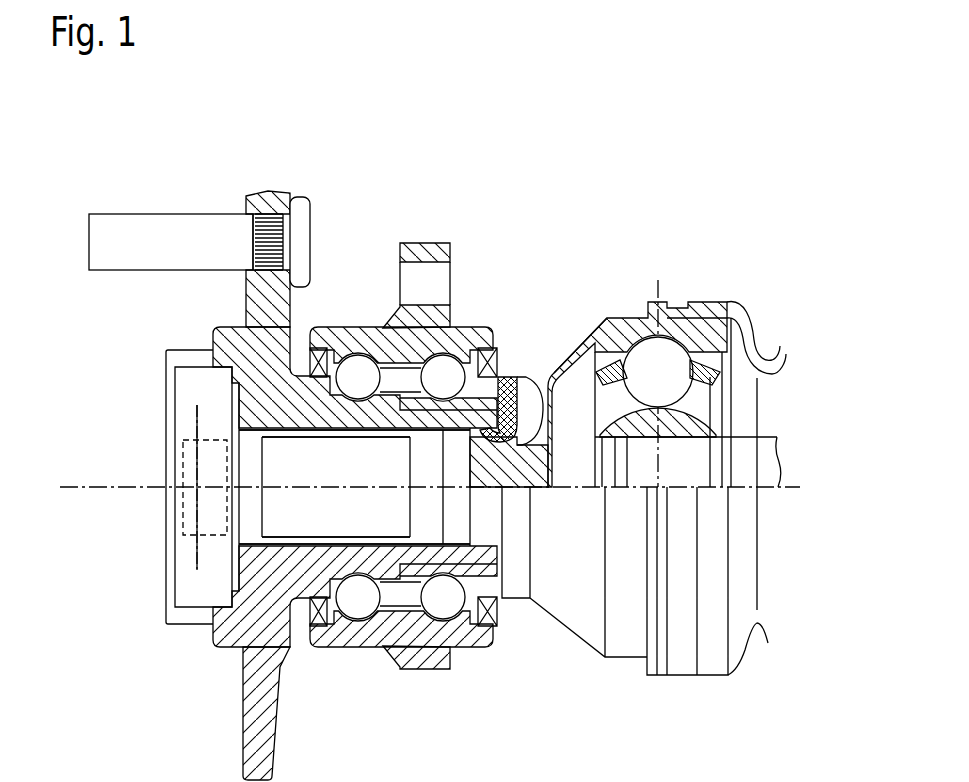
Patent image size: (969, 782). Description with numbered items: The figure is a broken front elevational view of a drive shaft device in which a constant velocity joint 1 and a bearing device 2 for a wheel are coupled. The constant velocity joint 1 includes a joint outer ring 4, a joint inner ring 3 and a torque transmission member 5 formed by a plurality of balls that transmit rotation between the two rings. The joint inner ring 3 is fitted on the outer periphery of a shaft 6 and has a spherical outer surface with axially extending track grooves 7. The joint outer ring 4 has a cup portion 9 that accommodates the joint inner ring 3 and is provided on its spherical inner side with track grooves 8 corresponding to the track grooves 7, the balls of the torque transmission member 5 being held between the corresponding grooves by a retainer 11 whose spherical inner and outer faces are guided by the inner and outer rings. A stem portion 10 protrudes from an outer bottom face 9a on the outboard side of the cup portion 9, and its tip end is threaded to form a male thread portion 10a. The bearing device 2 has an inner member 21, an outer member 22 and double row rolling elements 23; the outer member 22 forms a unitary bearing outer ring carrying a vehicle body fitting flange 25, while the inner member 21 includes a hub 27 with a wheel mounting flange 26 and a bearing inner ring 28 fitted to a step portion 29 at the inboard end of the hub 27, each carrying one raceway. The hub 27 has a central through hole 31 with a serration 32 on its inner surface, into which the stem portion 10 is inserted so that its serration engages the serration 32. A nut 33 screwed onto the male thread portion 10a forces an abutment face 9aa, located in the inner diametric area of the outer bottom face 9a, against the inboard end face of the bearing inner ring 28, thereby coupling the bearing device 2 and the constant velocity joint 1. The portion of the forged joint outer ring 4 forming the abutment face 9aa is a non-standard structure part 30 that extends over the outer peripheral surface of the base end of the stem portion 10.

The constant velocity joint 1 is at (642, 258).
The bearing device 2 is at (360, 255).
The joint inner ring 3 is at (650, 434).
The joint outer ring 4 is at (643, 304).
The torque transmission member 5 is at (703, 348).
The shaft 6 is at (765, 468).
The track grooves 7 is at (697, 403).
The track grooves 8 is at (740, 323).
The cup portion 9 is at (596, 330).
The outer bottom face 9a is at (560, 330).
The abutment face 9aa is at (498, 330).
The stem portion 10 is at (307, 500).
The male thread portion 10a is at (250, 497).
The retainer 11 is at (727, 347).
The inner member 21 is at (108, 392).
The outer member 22 is at (380, 328).
The double row rolling elements 23 is at (445, 604).
The vehicle body fitting flange 25 is at (423, 253).
The wheel mounting flange 26 is at (253, 197).
The hub 27 is at (280, 397).
The bearing inner ring 28 is at (437, 430).
The step portion 29 is at (512, 598).
The non-standard structure part 30 is at (532, 377).
The through hole 31 is at (215, 537).
The serration 32 is at (300, 540).
The nut 33 is at (208, 495).